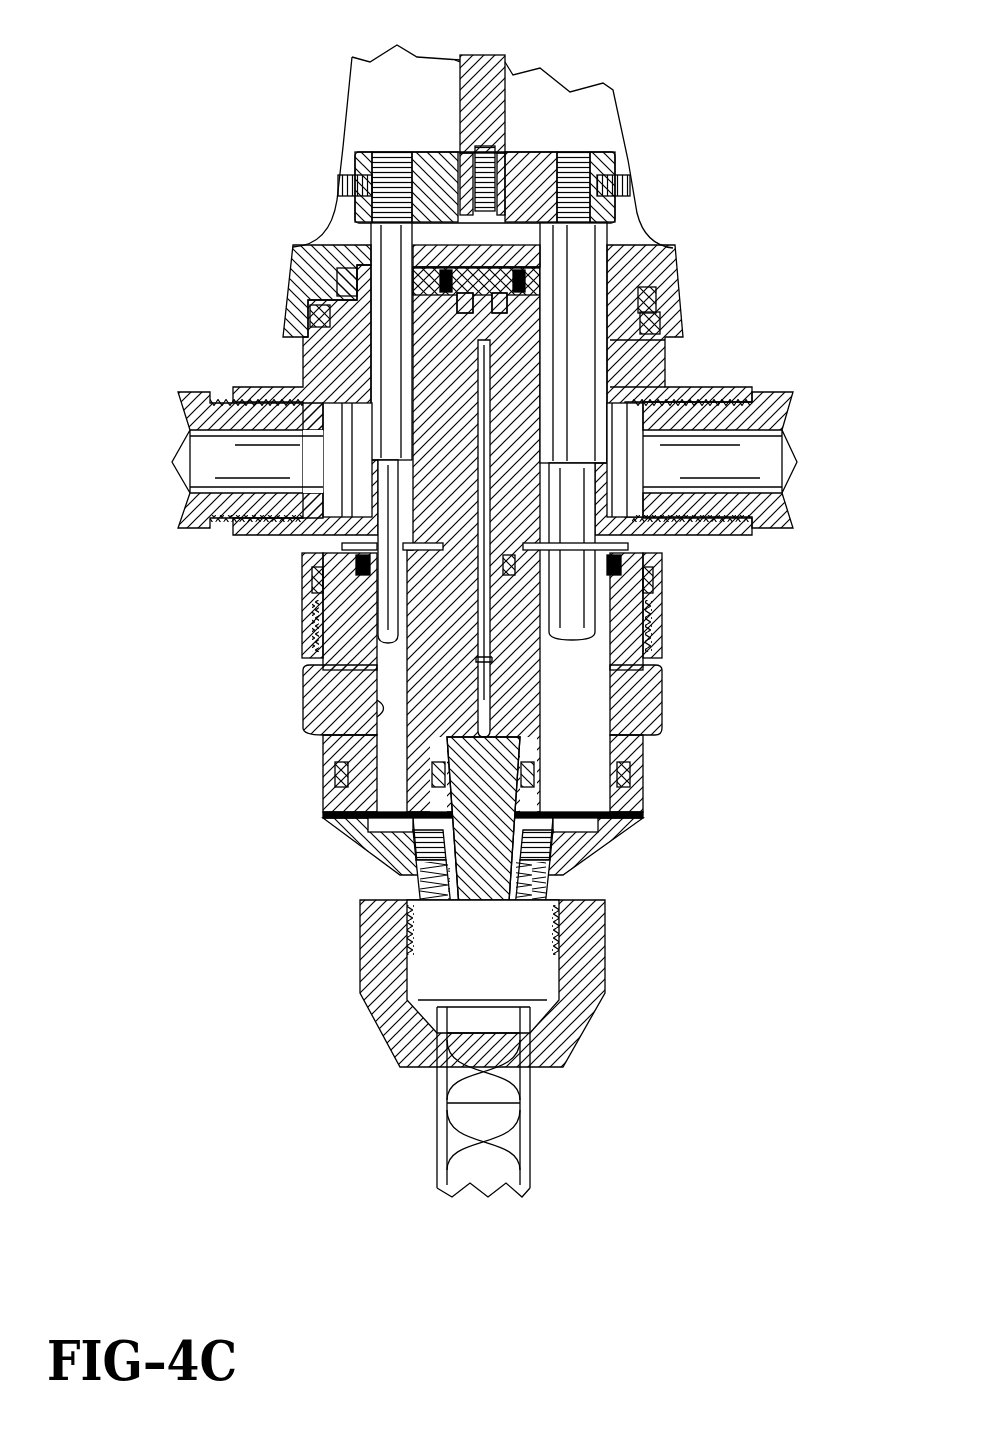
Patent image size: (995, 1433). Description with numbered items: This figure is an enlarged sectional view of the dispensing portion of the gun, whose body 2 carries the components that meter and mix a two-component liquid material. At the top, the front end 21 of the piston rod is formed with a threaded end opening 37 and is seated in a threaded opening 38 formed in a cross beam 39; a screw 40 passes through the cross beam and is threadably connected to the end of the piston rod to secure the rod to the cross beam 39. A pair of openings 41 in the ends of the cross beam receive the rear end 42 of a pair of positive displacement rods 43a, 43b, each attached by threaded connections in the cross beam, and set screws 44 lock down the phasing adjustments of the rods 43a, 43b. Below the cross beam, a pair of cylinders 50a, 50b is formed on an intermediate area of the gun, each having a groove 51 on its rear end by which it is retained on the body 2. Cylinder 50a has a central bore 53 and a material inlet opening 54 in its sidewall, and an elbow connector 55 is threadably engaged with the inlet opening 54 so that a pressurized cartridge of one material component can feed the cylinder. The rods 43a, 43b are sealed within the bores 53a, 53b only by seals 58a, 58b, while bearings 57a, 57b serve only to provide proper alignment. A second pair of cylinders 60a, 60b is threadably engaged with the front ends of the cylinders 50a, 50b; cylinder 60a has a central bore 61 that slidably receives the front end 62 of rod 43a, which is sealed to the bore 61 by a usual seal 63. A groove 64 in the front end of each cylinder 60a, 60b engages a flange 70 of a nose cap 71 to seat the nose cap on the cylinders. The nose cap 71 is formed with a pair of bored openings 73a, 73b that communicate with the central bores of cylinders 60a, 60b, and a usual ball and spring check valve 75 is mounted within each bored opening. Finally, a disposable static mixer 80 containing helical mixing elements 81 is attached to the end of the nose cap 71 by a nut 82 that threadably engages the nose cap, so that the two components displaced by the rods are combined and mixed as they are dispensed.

The body 2 is at (338, 70).
The front end of piston rod 21 is at (512, 83).
The threaded end opening 37 is at (490, 173).
The threaded opening 38 is at (462, 142).
The cross beam 39 is at (425, 150).
The screw 40 is at (523, 157).
The openings 41 is at (358, 156).
The rear end of displacement rod 42 is at (381, 232).
The positive displacement rod 43a is at (383, 373).
The positive displacement rod 43b is at (573, 420).
The set screws 44 is at (338, 186).
The cylinder 50a is at (664, 640).
The cylinder 50b is at (300, 551).
The groove 51 is at (632, 320).
The central bore 53 is at (667, 563).
The bore 53a is at (313, 348).
The bore 53b is at (625, 332).
The material inlet opening 54 is at (735, 525).
The elbow connector 55 is at (172, 462).
The bearing 57a is at (337, 327).
The bearing 57b is at (625, 352).
The seal 58a is at (337, 282).
The seal 58b is at (632, 270).
The cylinder 60a is at (660, 725).
The cylinder 60b is at (303, 707).
The central bore 61 is at (325, 750).
The front end of rod 62 is at (310, 683).
The seal 63 is at (312, 600).
The groove 64 is at (330, 800).
The flange 70 is at (643, 800).
The nose cap 71 is at (345, 860).
The bored opening 73a is at (437, 997).
The bored opening 73b is at (515, 997).
The ball and spring check valve 75 is at (535, 863).
The disposable static mixer 80 is at (530, 1118).
The helical mixing elements 81 is at (447, 1155).
The nut 82 is at (605, 950).